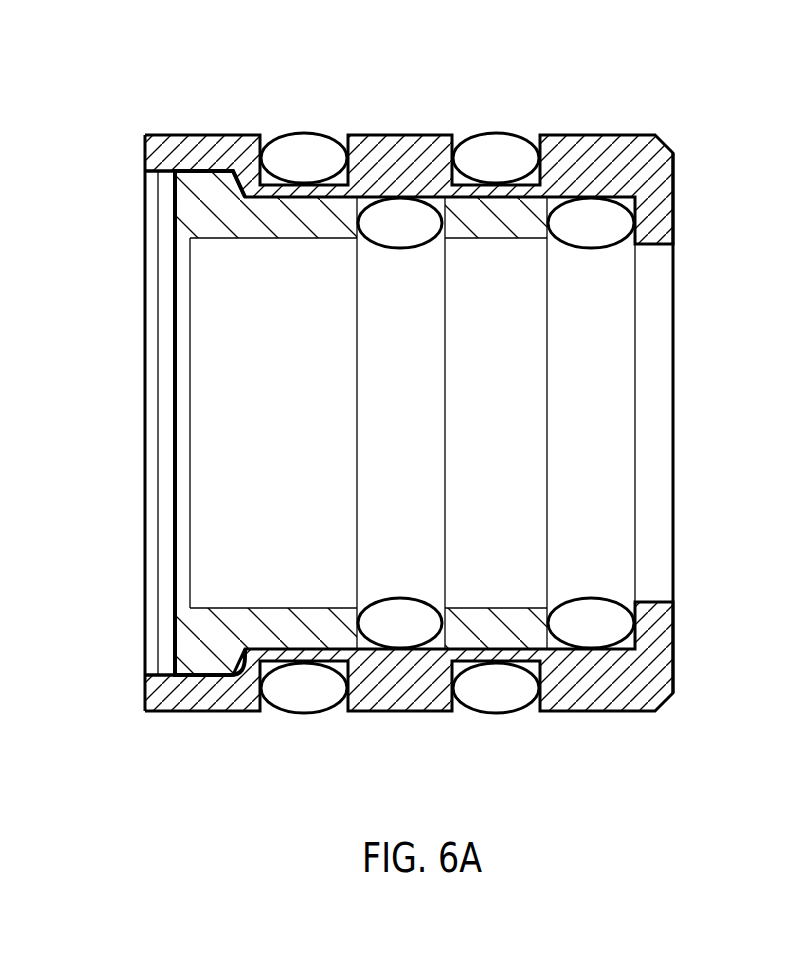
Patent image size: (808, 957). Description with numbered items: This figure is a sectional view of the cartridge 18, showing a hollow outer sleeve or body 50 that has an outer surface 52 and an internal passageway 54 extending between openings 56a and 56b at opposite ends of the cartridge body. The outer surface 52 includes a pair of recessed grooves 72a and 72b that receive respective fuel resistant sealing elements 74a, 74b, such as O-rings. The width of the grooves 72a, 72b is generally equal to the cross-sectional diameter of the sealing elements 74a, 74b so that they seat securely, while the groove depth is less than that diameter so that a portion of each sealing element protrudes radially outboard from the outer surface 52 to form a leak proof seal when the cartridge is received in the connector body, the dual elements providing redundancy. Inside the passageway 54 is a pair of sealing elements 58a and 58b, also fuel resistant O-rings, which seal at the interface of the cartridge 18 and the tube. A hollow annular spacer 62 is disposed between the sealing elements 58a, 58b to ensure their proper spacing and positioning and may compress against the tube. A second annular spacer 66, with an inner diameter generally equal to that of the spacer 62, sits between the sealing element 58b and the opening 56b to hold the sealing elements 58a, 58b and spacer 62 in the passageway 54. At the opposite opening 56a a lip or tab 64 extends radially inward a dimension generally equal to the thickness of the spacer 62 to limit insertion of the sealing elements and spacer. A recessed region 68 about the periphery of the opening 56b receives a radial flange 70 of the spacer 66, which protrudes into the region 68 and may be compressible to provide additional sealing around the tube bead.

The cartridge 18 is at (724, 91).
The hollow outer sleeve or body 50 is at (218, 136).
The outer surface 52 is at (588, 132).
The internal passageway 54 is at (582, 402).
The opening 56a is at (675, 301).
The opening 56b is at (145, 305).
The sealing element 58a is at (598, 622).
The sealing element 58b is at (393, 620).
The hollow annular spacer 62 is at (483, 217).
The lip or tab 64 is at (655, 638).
The second annular spacer 66 is at (277, 633).
The recessed region 68 is at (162, 675).
The radial flange 70 is at (207, 188).
The recessed groove 72a is at (465, 665).
The recessed groove 72b is at (347, 663).
The sealing element 74a is at (493, 152).
The sealing element 74b is at (313, 148).